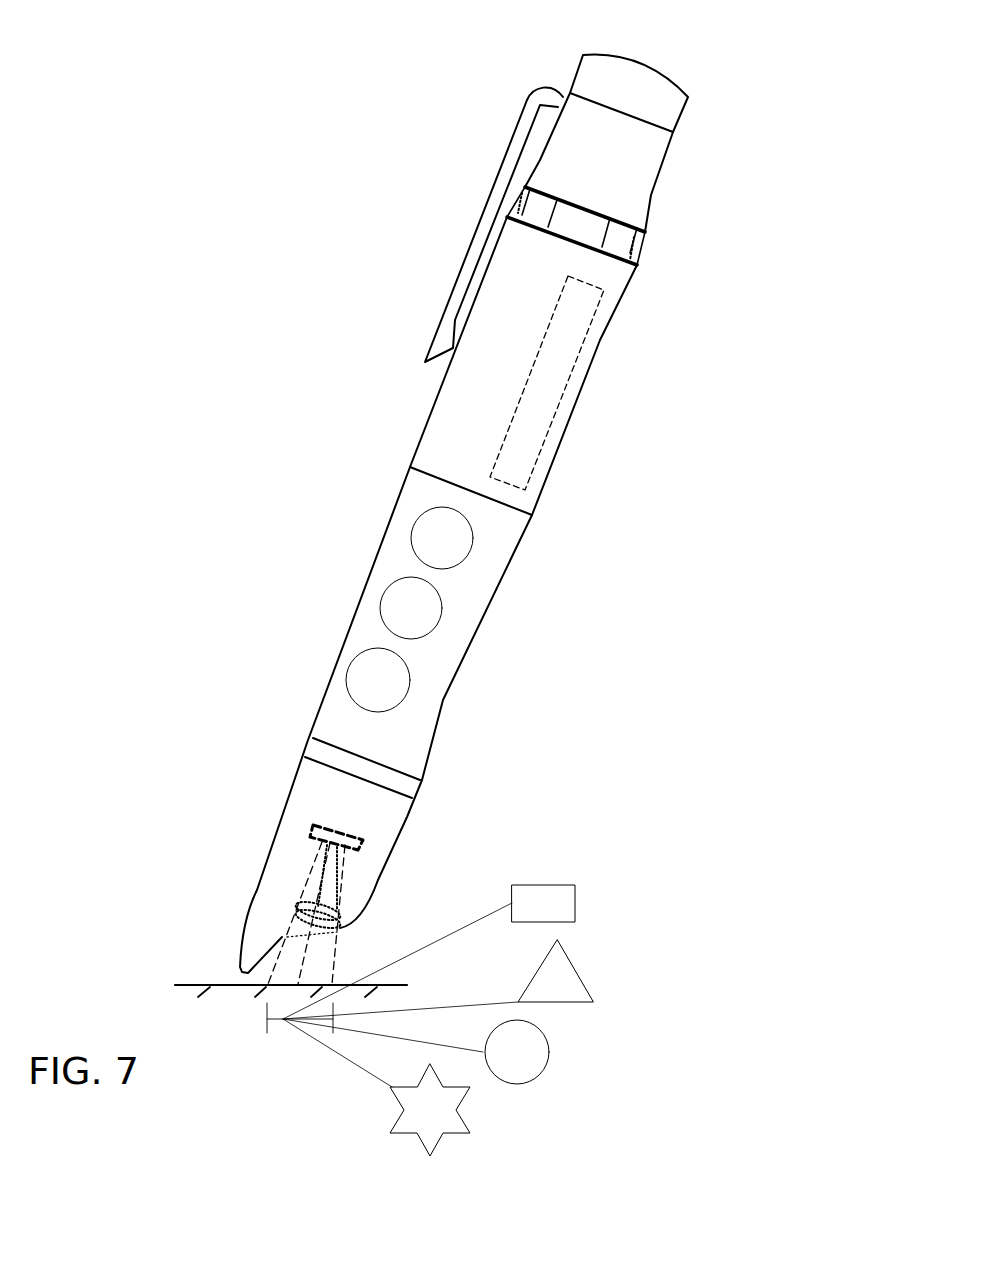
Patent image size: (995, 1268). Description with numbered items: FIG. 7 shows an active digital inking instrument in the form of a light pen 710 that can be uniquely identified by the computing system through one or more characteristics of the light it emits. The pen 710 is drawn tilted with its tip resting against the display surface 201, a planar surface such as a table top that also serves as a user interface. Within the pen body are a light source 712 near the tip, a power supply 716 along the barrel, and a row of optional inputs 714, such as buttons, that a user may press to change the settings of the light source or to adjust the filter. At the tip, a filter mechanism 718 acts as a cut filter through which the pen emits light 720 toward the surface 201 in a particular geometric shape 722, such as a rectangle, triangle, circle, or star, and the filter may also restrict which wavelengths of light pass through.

The light pen 710 is at (331, 168).
The light source 712 is at (333, 848).
The optional inputs 714 is at (446, 536).
The power supply 716 is at (558, 373).
The filter mechanism 718 is at (295, 910).
The emitted light 720 is at (335, 958).
The display surface 201 is at (185, 985).
The geometric shape 722 is at (620, 1042).